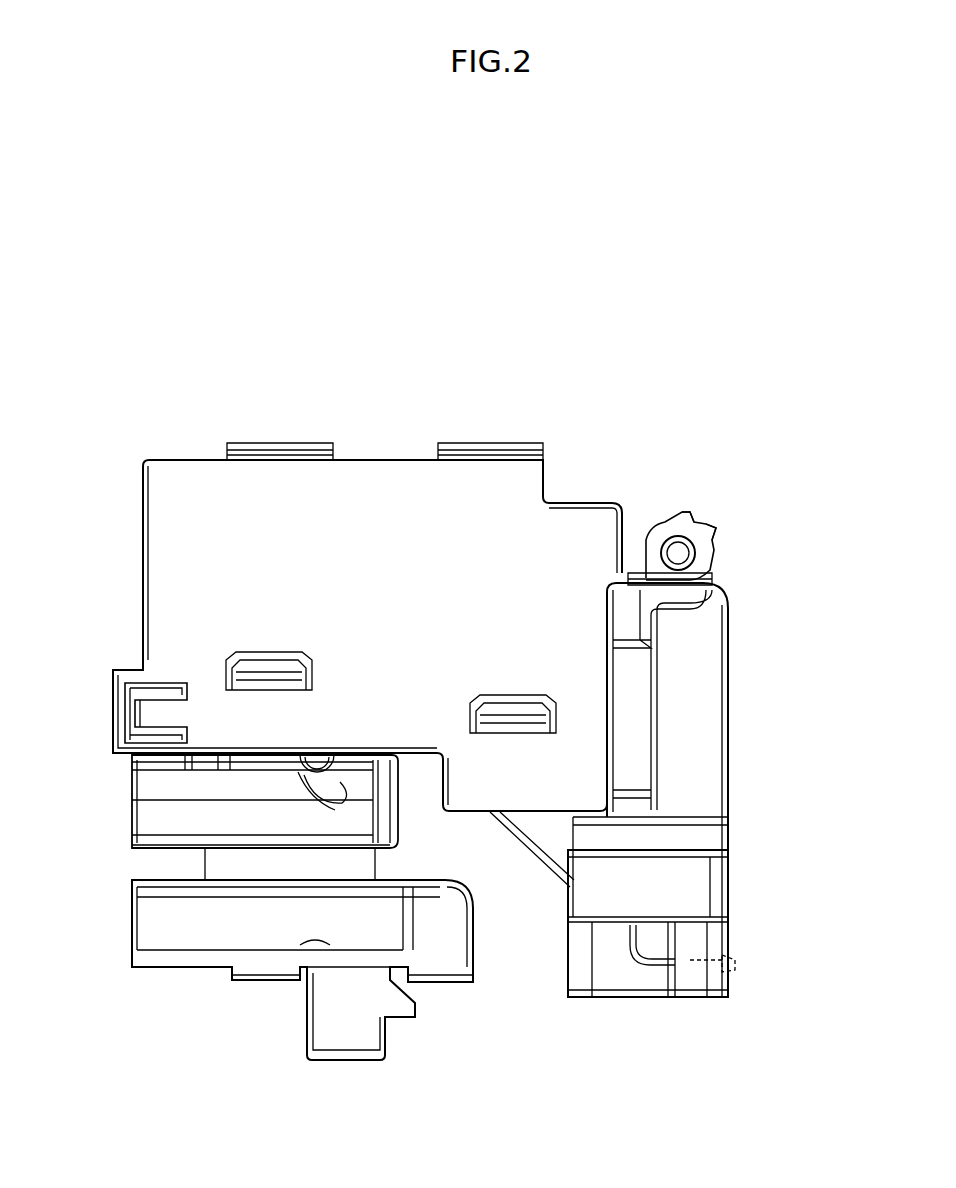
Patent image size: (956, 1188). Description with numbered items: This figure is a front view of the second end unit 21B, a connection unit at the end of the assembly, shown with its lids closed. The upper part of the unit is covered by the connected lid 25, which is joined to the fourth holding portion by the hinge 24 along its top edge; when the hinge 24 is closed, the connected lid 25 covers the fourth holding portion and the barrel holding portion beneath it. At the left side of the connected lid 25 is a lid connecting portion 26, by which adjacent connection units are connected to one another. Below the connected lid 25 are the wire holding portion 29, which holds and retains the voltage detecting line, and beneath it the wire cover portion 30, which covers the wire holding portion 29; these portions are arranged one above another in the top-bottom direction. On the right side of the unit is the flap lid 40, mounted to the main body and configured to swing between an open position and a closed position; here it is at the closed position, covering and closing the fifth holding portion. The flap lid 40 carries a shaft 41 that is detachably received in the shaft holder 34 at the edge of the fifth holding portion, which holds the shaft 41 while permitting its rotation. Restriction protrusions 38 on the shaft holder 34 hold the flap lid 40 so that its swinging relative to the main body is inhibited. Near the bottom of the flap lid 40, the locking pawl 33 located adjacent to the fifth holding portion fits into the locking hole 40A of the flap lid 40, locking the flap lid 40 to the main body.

The second end unit 21B is at (393, 358).
The hinge 24 is at (300, 442).
The connected lid 25 is at (200, 478).
The lid connecting portion 26 is at (125, 722).
The wire holding portion 29 is at (147, 820).
The wire cover portion 30 is at (147, 940).
The locking pawl 33 is at (672, 1000).
The shaft holder 34 is at (668, 536).
The restriction protrusion 38 is at (690, 513).
The flap lid 40 is at (733, 703).
The locking hole 40A is at (665, 965).
The shaft 41 is at (700, 551).